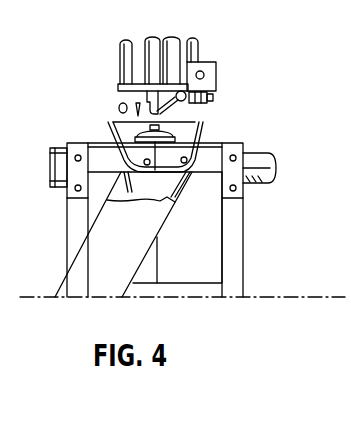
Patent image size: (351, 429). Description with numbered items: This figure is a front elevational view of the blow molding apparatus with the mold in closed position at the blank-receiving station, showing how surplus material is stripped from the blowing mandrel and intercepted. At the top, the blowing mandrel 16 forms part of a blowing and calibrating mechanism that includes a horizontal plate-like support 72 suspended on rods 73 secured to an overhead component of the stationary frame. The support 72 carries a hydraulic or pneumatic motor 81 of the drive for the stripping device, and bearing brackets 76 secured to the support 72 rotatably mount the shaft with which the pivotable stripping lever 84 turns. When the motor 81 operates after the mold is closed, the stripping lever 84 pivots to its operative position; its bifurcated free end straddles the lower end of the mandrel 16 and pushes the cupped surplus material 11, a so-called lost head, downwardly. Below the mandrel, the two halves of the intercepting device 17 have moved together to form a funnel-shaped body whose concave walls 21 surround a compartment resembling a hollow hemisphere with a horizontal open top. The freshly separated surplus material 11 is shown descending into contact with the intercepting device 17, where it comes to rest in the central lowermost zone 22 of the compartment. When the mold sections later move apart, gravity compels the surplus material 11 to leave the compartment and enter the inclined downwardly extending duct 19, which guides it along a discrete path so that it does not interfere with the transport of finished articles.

The surplus material 11 is at (138, 137).
The blowing mandrel 16 is at (165, 42).
The intercepting device 17 is at (113, 121).
The duct 19 is at (124, 271).
The walls 21 is at (198, 206).
The central lowermost zone 22 is at (152, 208).
The plate-like support 72 is at (143, 84).
The rods 73 is at (125, 50).
The bearing brackets 76 is at (214, 100).
The motor 81 is at (216, 72).
The stripping lever 84 is at (160, 112).